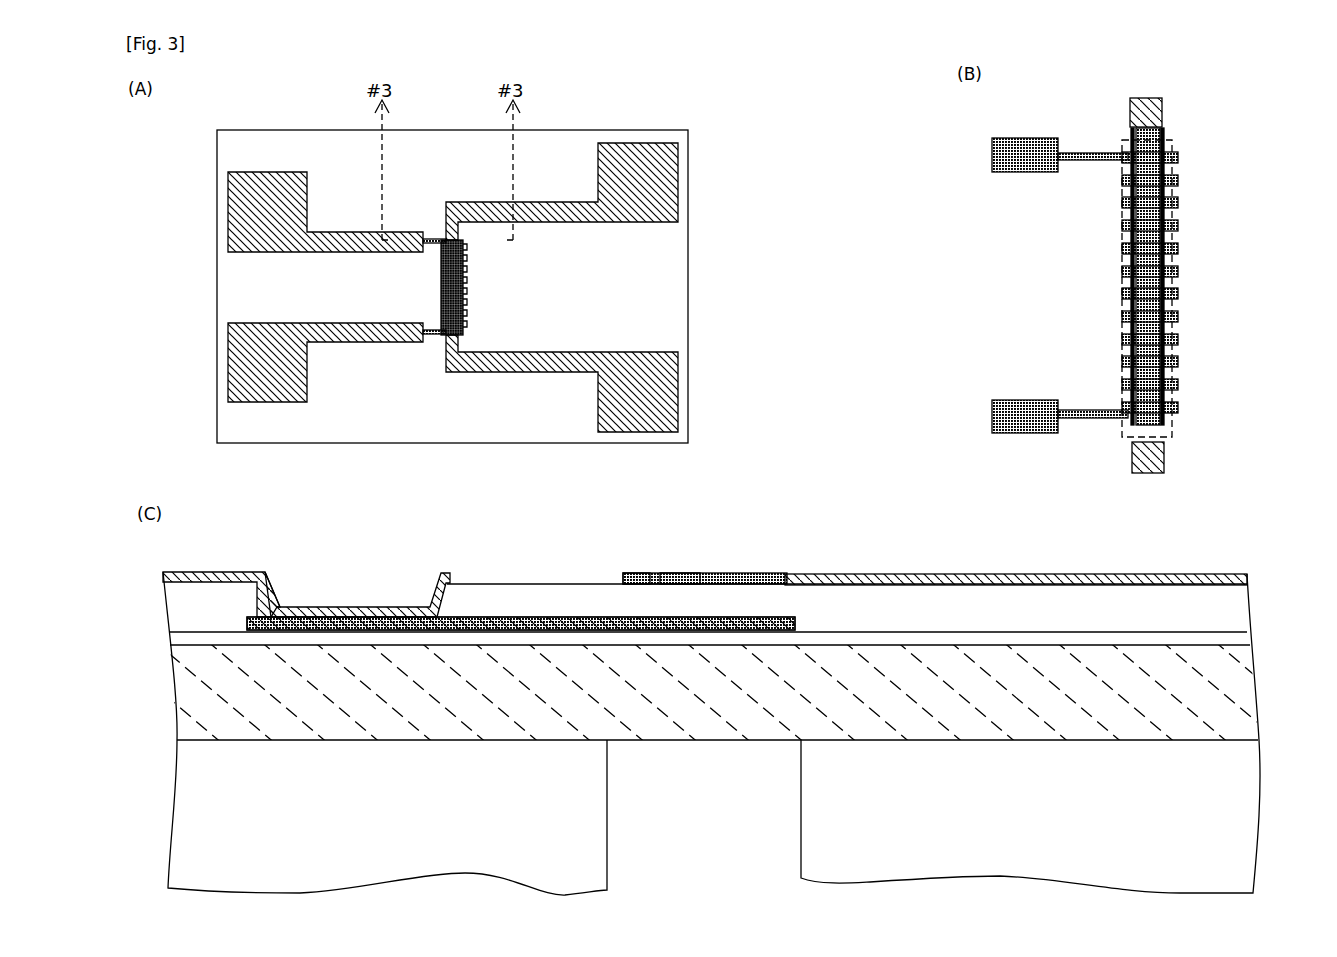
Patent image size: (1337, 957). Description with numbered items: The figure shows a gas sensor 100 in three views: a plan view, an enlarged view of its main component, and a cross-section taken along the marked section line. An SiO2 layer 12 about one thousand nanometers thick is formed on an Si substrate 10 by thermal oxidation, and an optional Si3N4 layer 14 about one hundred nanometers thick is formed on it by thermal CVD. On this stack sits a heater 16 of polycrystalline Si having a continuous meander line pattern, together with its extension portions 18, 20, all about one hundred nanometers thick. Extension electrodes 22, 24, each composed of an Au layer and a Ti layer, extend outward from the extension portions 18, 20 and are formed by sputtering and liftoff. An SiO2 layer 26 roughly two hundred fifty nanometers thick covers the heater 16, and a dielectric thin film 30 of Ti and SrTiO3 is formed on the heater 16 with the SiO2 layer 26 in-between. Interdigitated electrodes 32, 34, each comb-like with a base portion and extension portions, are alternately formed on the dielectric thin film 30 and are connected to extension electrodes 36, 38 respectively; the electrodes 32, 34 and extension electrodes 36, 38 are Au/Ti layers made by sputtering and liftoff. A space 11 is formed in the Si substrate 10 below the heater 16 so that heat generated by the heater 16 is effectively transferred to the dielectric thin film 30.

The electro-optical element 100 is at (827, 166).
The Si substrate 10 is at (175, 853).
The space 11 is at (727, 848).
The SiO2 layer 12 is at (1255, 690).
The Si3N4 layer 14 is at (680, 290).
The heater 16 is at (463, 253).
The extension portion 18 is at (408, 343).
The extension portion 20 is at (410, 238).
The extension electrode 22 is at (228, 358).
The extension electrode 24 is at (228, 208).
The SiO2 layer 26 is at (1237, 607).
The dielectric thin film 30 is at (441, 300).
The interdigitated electrode 32 is at (463, 335).
The interdigitated electrode 34 is at (446, 243).
The extension electrode 36 is at (676, 395).
The extension electrode 38 is at (676, 180).